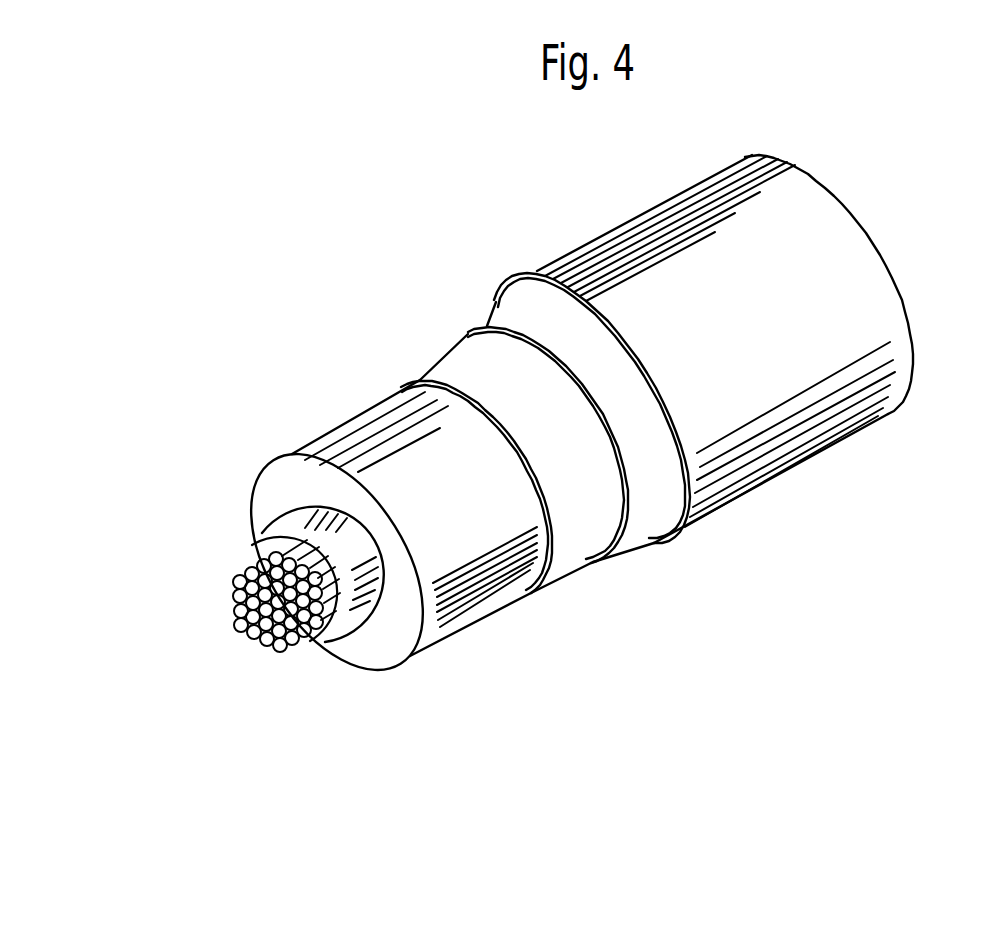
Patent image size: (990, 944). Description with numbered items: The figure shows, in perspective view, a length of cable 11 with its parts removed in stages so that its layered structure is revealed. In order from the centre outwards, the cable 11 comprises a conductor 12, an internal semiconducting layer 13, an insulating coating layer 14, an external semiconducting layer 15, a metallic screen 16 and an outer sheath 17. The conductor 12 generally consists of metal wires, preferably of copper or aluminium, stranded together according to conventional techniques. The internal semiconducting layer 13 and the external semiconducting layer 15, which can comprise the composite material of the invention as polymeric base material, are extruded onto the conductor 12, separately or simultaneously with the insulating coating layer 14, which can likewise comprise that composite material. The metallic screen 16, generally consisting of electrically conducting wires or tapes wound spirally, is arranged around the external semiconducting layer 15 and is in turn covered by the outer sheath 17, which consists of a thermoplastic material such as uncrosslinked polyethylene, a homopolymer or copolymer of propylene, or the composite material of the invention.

The cable 11 is at (565, 245).
The conductor 12 is at (237, 560).
The internal semiconducting layer 13 is at (358, 620).
The insulating coating layer 14 is at (338, 425).
The external semiconducting layer 15 is at (452, 350).
The metallic screen 16 is at (650, 538).
The outer sheath 17 is at (798, 468).